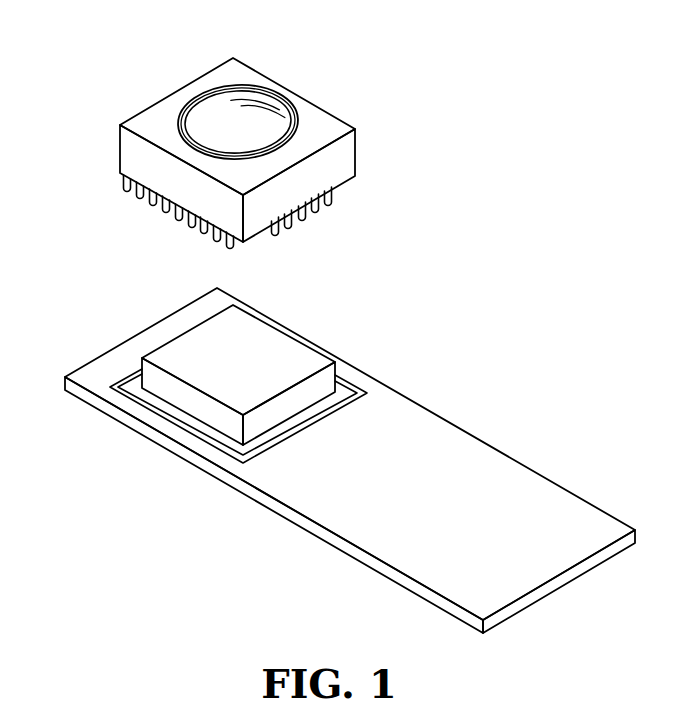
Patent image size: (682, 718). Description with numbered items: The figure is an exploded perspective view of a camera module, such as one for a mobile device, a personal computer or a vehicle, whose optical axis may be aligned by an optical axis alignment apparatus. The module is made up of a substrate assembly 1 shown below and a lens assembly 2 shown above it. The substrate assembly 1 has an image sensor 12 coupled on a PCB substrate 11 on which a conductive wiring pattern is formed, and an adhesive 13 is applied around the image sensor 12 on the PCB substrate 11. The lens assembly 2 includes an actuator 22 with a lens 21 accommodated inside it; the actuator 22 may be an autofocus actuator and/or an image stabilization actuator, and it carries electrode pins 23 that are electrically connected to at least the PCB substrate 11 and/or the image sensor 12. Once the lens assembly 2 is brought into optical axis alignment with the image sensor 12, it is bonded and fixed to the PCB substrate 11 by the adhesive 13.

The substrate assembly 1 is at (104, 322).
The PCB substrate 11 is at (430, 450).
The image sensor 12 is at (282, 352).
The adhesive 13 is at (363, 390).
The lens assembly 2 is at (143, 84).
The lens 21 is at (263, 102).
The actuator 22 is at (342, 162).
The electrode pin 23 is at (330, 202).